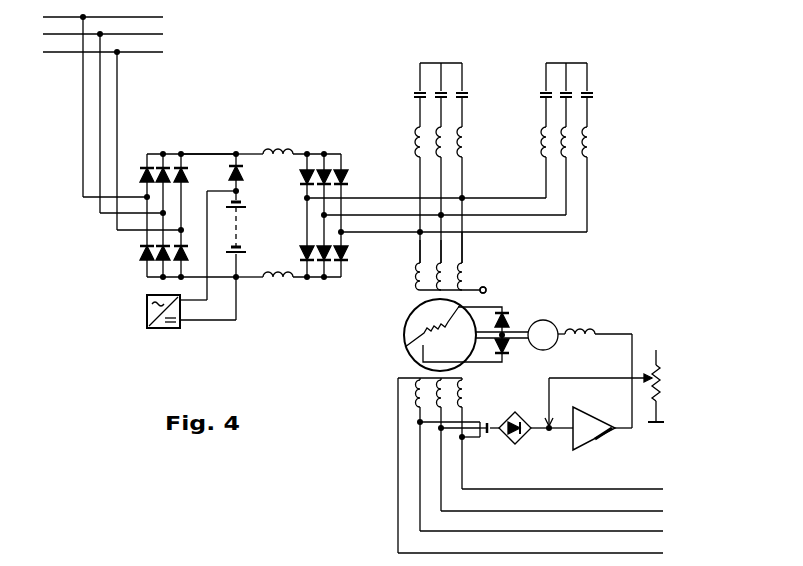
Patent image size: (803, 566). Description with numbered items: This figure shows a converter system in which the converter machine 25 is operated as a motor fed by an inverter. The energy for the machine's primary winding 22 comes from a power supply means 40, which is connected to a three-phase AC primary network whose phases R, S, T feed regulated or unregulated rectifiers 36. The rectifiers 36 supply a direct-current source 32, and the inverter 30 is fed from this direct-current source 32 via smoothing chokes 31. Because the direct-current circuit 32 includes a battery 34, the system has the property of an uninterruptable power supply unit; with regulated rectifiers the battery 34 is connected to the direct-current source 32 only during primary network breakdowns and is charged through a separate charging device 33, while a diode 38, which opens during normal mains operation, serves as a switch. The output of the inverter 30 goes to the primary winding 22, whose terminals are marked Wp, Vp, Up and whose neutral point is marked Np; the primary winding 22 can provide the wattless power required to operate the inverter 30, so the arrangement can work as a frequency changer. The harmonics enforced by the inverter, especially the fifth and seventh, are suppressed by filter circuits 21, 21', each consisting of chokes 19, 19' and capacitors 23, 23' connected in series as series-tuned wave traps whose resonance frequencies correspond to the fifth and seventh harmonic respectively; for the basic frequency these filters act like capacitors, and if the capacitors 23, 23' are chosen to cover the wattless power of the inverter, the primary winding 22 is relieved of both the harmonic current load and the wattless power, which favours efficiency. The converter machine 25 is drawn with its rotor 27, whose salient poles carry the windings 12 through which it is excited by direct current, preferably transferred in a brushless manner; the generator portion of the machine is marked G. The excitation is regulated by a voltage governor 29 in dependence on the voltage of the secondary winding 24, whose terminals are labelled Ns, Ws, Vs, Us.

The supply phase R is at (96, 105).
The supply phase S is at (97, 122).
The supply phase T is at (106, 139).
The rectifiers 36 is at (165, 151).
The power supply means 40 is at (203, 150).
The direct-current source 32 is at (236, 152).
The diode 38 is at (244, 176).
The battery 34 is at (243, 229).
The charging device 33 is at (158, 330).
The smoothing chokes 31 is at (275, 151).
The inverter 30 is at (318, 151).
The capacitor 23 is at (421, 80).
The filter circuit 21 is at (414, 111).
The choke 19 is at (419, 195).
The capacitor 23' is at (545, 80).
The filter circuit 21' is at (538, 111).
The choke 19' is at (542, 179).
The primary winding 22 is at (420, 266).
The primary terminal W Wp is at (420, 250).
The primary terminal V Vp is at (441, 254).
The primary terminal U Up is at (462, 241).
The primary neutral terminal Np is at (486, 288).
The rotor 27 is at (408, 330).
The windings 12 is at (407, 348).
The converter machine 25 is at (518, 310).
The three-phase generator G is at (555, 322).
The voltage governor 29 is at (590, 440).
The secondary winding 24 is at (420, 399).
The secondary neutral terminal Ns is at (398, 458).
The secondary terminal W Ws is at (420, 478).
The secondary terminal V Vs is at (441, 491).
The secondary terminal U Us is at (462, 488).